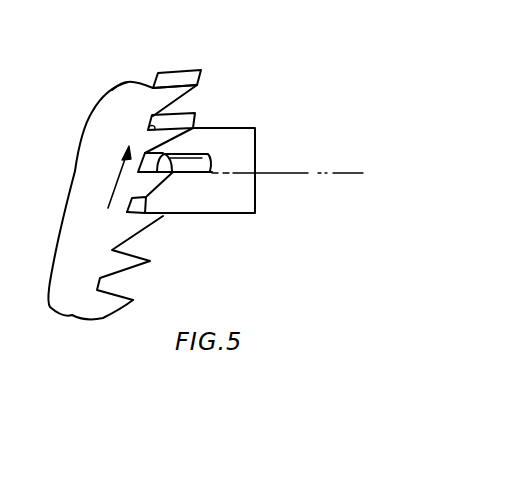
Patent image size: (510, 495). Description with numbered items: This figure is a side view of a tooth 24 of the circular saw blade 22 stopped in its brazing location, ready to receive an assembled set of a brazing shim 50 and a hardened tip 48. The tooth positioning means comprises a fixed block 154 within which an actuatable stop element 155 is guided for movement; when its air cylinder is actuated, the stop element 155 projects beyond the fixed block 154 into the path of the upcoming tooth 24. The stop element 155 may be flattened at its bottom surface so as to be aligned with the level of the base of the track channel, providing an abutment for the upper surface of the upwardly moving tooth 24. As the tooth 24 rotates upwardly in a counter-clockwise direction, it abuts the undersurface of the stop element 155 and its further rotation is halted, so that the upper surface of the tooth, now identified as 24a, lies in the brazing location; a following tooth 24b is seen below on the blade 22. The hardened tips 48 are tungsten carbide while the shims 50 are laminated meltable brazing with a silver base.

The circular saw blade 22 is at (74, 172).
The brazing shim 50 is at (149, 122).
The hardened tip 48 is at (188, 72).
The tooth 24 is at (183, 94).
The fixed block 154 is at (255, 156).
The stop element 155 is at (198, 173).
The upper surface of the tooth in brazing location 24a is at (158, 183).
The tooth 24b is at (149, 227).